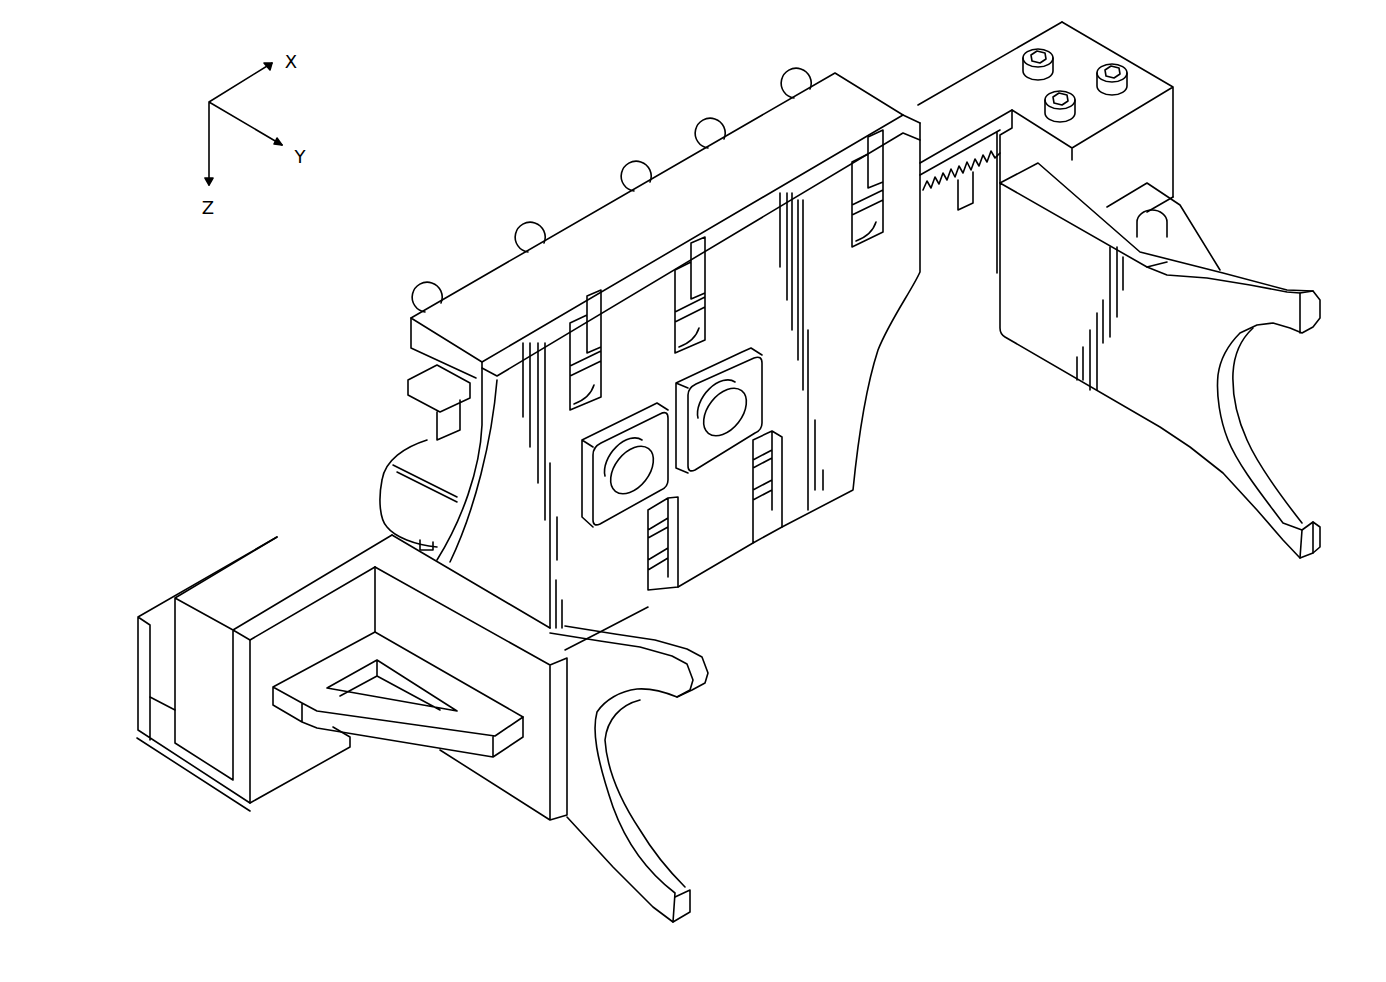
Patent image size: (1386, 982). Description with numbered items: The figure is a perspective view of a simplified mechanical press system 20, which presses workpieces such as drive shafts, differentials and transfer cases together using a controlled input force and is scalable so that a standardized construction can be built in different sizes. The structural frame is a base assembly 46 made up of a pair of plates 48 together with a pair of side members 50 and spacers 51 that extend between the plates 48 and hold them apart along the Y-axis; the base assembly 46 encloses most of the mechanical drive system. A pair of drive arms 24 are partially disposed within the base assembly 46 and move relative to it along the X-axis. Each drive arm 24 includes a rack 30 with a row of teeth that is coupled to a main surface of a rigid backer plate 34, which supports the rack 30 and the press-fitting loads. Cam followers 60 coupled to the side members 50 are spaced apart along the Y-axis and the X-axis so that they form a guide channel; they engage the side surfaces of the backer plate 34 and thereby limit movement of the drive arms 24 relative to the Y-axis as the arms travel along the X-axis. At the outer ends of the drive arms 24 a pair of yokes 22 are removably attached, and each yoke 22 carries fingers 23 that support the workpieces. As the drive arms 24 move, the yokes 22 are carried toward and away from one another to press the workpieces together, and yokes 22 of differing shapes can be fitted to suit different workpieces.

The press system 20 is at (588, 100).
The base assembly 46 is at (823, 58).
The side member 50 is at (765, 140).
The plate 48 is at (845, 348).
The cam follower 60 is at (583, 393).
The spacer 51 is at (390, 492).
The drive arm 24 is at (945, 70).
The backer plate 34 is at (996, 78).
The rack 30 is at (935, 175).
The yoke 22 is at (1132, 385).
The finger 23 is at (1288, 284).